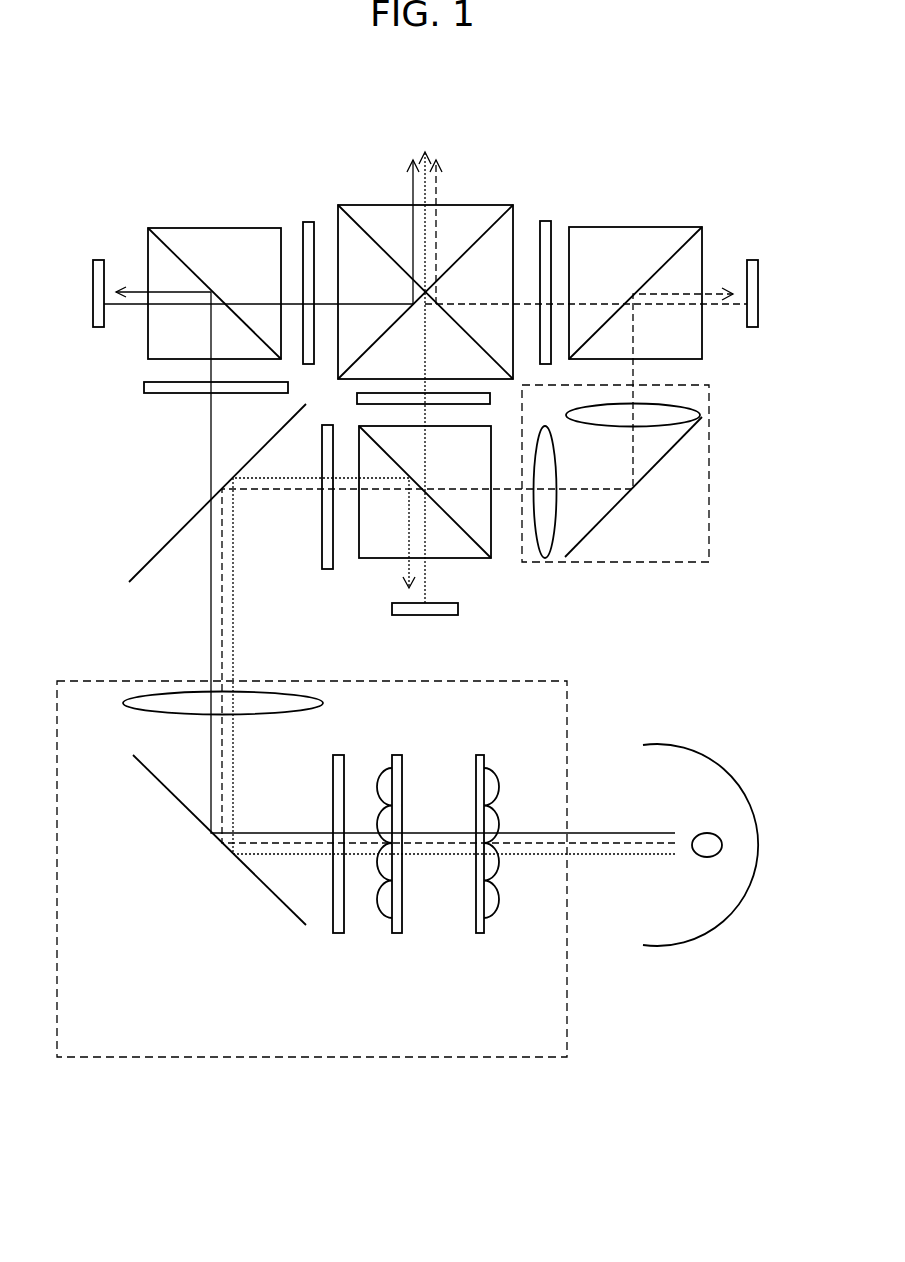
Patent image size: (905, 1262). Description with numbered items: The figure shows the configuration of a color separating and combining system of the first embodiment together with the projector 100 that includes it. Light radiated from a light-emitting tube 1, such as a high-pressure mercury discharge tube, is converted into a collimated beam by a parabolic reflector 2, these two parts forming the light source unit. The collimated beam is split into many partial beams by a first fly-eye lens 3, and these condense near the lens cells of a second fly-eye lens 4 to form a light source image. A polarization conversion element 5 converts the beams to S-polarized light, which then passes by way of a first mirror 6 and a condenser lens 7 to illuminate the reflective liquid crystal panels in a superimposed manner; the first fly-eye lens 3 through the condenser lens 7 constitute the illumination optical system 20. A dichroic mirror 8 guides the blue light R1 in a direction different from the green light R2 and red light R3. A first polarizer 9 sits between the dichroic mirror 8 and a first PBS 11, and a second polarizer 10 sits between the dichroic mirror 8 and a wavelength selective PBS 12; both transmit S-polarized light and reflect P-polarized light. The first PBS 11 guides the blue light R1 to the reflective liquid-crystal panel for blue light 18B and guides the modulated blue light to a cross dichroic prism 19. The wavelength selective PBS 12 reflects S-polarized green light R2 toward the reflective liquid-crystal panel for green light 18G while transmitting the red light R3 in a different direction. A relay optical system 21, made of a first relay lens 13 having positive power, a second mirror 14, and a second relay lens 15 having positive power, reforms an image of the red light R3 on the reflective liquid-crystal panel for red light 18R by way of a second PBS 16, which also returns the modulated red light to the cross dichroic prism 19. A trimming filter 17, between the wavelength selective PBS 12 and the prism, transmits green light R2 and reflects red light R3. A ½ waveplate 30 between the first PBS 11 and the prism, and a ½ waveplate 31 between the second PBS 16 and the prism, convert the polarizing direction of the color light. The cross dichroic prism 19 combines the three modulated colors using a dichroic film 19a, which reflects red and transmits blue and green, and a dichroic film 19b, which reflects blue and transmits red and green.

The projector 100 is at (738, 168).
The light-emitting tube 1 is at (706, 843).
The parabolic reflector 2 is at (680, 940).
The first fly-eye lens 3 is at (480, 918).
The second fly-eye lens 4 is at (395, 918).
The polarization conversion element 5 is at (336, 918).
The first mirror 6 is at (170, 795).
The condenser lens 7 is at (140, 703).
The dichroic mirror 8 is at (142, 565).
The first polarizer 9 is at (147, 386).
The second polarizer 10 is at (322, 532).
The first PBS 11 is at (210, 228).
The wavelength selective PBS 12 is at (375, 547).
The first relay lens 13 is at (545, 545).
The second mirror 14 is at (605, 515).
The second relay lens 15 is at (685, 412).
The second PBS 16 is at (610, 235).
The trimming filter 17 is at (360, 397).
The reflective liquid-crystal panel for blue light 18B is at (93, 302).
The reflective liquid-crystal panel for green light 18G is at (445, 617).
The reflective liquid-crystal panel for red light 18R is at (758, 303).
The cross dichroic prism 19 is at (447, 212).
The dichroic film 19a is at (357, 220).
The dichroic film 19b is at (478, 235).
The illumination optical system 20 is at (80, 681).
The relay optical system 21 is at (709, 545).
The ½ waveplate 30 is at (305, 222).
The ½ waveplate 31 is at (545, 221).
The blue light R1 is at (210, 571).
The green light R2 is at (233, 626).
The red light R3 is at (222, 617).